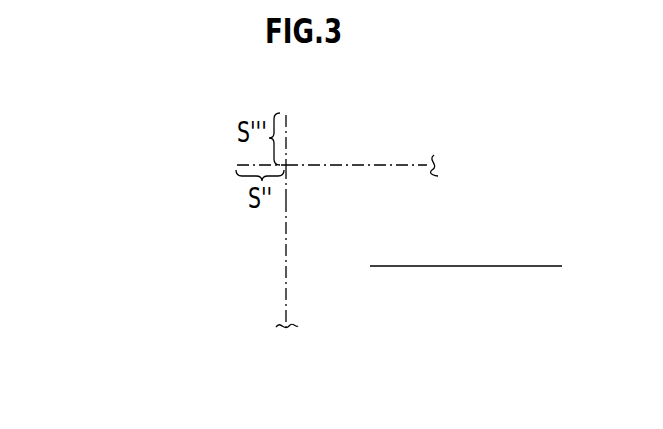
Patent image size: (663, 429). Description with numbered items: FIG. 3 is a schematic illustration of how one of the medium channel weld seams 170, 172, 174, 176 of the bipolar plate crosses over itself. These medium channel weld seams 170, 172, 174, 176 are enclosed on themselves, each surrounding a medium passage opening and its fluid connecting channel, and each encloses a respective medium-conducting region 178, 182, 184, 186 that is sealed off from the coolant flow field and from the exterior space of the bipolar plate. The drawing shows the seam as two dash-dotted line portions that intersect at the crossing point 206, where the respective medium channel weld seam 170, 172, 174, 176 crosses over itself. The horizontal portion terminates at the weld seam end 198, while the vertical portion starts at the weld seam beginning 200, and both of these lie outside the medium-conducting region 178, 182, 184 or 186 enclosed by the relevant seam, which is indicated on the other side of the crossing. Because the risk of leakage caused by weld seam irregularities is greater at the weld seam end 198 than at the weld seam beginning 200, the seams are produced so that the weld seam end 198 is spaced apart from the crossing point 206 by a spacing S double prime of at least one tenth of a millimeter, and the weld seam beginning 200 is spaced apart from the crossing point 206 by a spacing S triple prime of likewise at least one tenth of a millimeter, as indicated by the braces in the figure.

The first medium channel weld seam 170 is at (312, 204).
The second medium channel weld seam 172 is at (312, 204).
The third medium channel weld seam 174 is at (312, 204).
The fourth medium channel weld seam 176 is at (268, 263).
The first medium-conducting region 178 is at (466, 249).
The second medium-conducting region 182 is at (466, 249).
The third medium-conducting region 184 is at (466, 249).
The fourth medium-conducting region 186 is at (466, 249).
The weld seam end 198 is at (237, 165).
The weld seam beginning 200 is at (288, 116).
The crossing point 206 is at (287, 166).